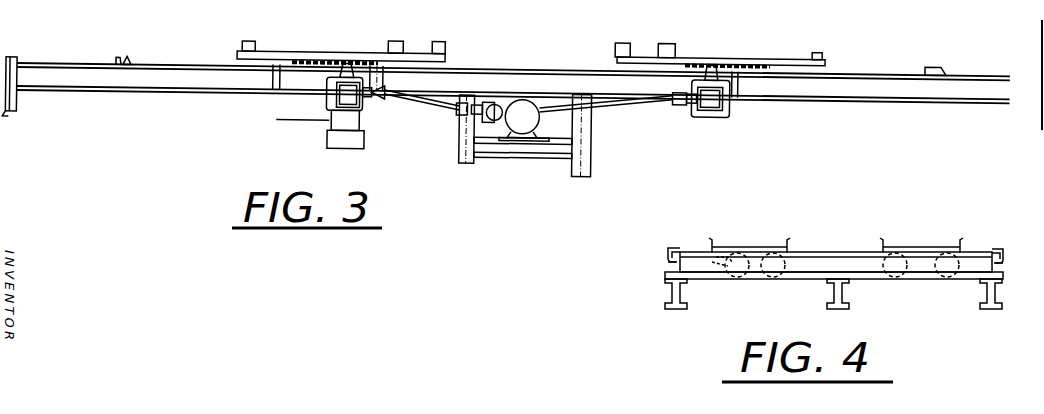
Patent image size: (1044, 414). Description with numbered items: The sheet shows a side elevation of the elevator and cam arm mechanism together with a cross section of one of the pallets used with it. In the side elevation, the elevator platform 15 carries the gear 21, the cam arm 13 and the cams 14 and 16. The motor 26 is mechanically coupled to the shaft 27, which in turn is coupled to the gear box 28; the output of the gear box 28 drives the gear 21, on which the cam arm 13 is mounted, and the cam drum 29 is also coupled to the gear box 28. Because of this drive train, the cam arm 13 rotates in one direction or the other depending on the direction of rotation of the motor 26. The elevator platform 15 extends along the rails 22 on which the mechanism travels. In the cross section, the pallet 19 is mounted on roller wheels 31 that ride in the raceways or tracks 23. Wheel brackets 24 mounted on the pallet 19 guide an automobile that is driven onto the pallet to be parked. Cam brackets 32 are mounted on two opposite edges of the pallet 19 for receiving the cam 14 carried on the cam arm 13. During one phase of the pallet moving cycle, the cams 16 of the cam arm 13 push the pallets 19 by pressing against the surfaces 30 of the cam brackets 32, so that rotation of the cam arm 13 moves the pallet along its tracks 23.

In FIG. 3, the cam arm 13 is at (304, 49).
In FIG. 3, the cam 14 is at (248, 42).
In FIG. 3, the elevator platform 15 is at (214, 125).
In FIG. 3, the cam 16 is at (428, 19).
In FIG. 4, the pallet 19 is at (857, 252).
In FIG. 3, the gear 21 is at (336, 56).
In FIG. 3, the rail 22 is at (205, 61).
In FIG. 3, the raceway 23 is at (124, 56).
In FIG. 4, the raceway 23 is at (928, 248).
In FIG. 3, the wheel bracket 24 is at (946, 47).
In FIG. 4, the wheel bracket 24 is at (713, 239).
In FIG. 3, the motor 26 is at (531, 99).
In FIG. 3, the shaft 27 is at (417, 95).
In FIG. 3, the gear box 28 is at (343, 91).
In FIG. 3, the cam drum 29 is at (362, 142).
In FIG. 4, the surface 30 is at (668, 249).
In FIG. 4, the roller wheel 31 is at (712, 268).
In FIG. 4, the cam bracket 32 is at (670, 263).